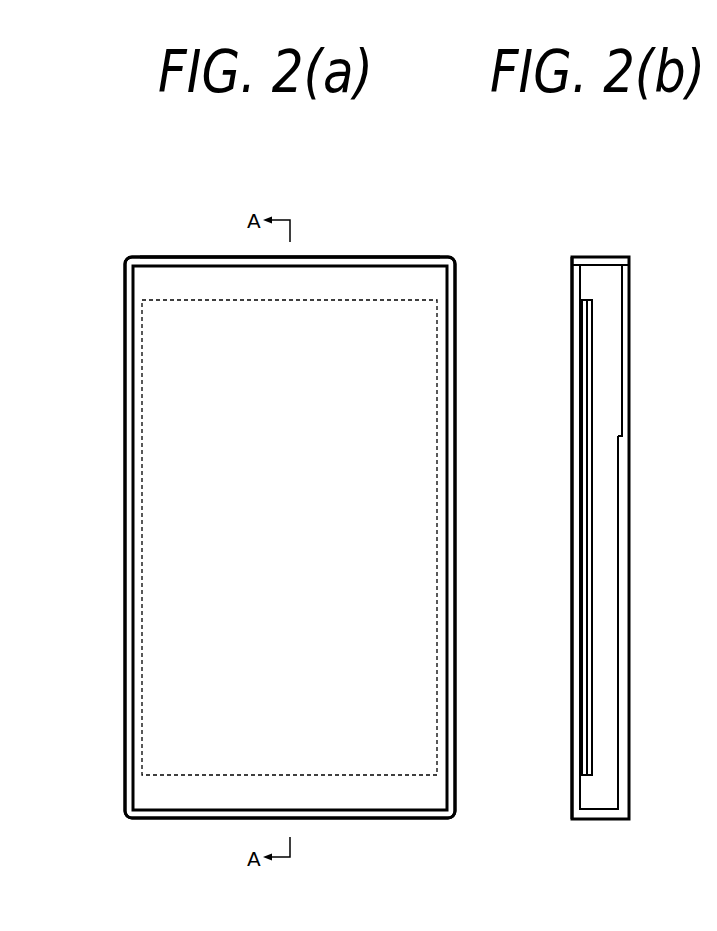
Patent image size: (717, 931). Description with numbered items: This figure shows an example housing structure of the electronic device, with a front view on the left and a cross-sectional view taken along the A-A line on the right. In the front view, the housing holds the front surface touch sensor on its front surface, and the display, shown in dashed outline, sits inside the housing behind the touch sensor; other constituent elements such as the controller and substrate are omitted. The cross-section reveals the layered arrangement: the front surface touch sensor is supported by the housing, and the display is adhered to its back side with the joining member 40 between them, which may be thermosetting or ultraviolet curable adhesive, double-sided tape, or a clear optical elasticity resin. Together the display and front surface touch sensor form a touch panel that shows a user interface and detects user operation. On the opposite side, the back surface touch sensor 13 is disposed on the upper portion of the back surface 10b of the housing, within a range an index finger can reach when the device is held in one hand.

The back surface of the housing 10b is at (629, 553).
The back surface touch sensor 13 is at (630, 292).
The joining member 40 is at (582, 353).